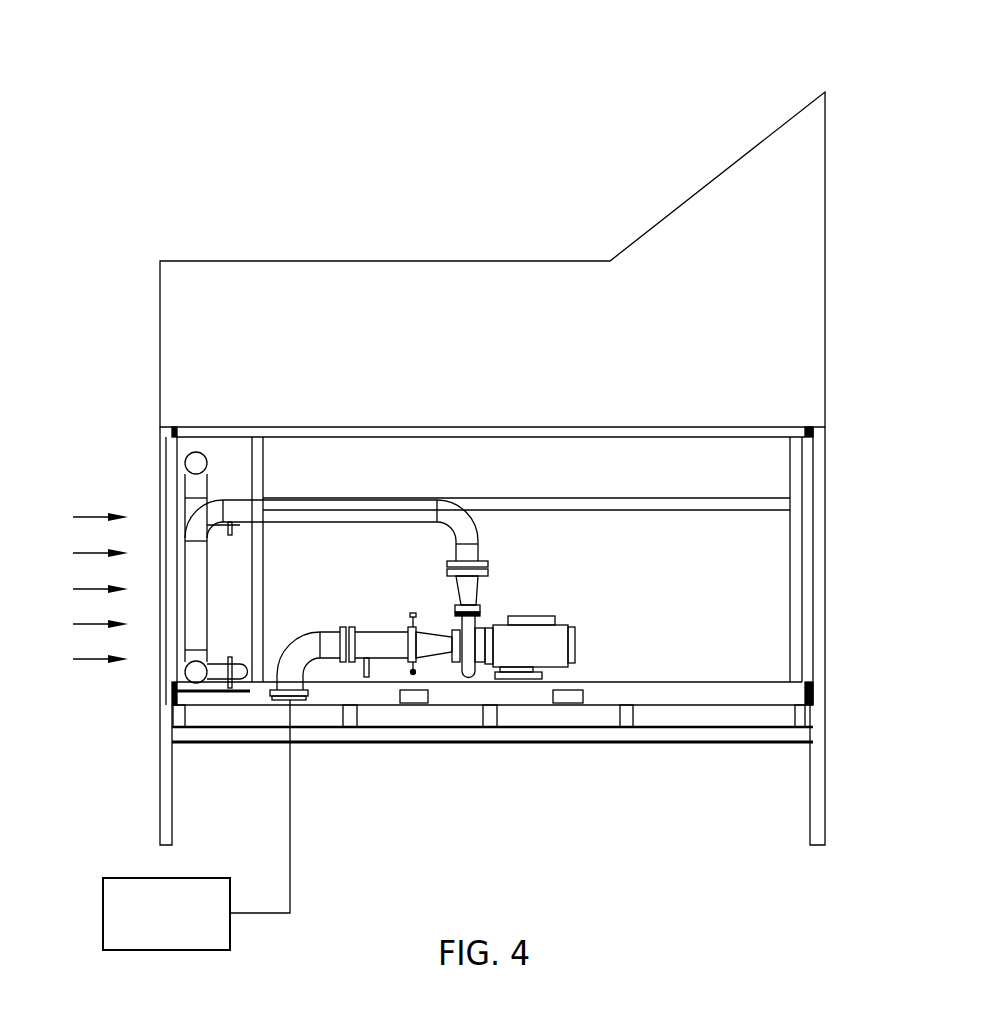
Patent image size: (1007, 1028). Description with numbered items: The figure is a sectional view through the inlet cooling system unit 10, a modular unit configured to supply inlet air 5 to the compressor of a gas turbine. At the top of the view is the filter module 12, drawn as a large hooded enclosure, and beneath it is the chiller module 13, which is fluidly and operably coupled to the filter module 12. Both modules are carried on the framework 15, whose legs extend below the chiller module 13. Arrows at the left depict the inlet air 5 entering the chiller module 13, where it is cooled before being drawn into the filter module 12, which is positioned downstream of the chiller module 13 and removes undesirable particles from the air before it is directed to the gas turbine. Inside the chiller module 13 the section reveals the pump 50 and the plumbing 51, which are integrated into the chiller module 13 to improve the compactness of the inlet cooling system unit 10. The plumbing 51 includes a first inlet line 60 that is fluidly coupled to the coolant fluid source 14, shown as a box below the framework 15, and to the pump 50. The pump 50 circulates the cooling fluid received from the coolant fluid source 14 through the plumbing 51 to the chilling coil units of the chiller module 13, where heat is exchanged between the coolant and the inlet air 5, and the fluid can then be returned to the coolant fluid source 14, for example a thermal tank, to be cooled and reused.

The inlet cooling system unit 10 is at (860, 77).
The filter module 12 is at (326, 226).
The chiller module 13 is at (857, 544).
The framework 15 is at (808, 797).
The inlet air 5 is at (95, 517).
The pump 50 is at (543, 650).
The plumbing 51 is at (598, 658).
The first inlet line 60 is at (290, 826).
The coolant fluid source 14 is at (165, 951).